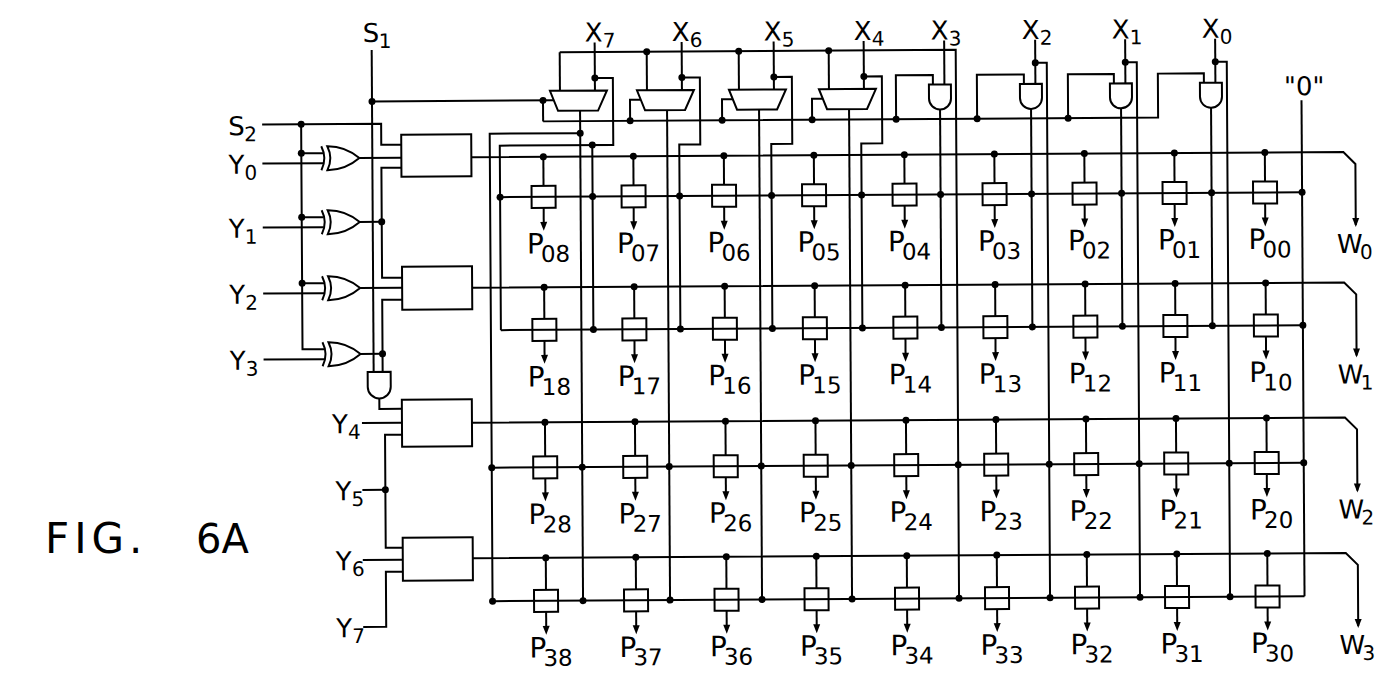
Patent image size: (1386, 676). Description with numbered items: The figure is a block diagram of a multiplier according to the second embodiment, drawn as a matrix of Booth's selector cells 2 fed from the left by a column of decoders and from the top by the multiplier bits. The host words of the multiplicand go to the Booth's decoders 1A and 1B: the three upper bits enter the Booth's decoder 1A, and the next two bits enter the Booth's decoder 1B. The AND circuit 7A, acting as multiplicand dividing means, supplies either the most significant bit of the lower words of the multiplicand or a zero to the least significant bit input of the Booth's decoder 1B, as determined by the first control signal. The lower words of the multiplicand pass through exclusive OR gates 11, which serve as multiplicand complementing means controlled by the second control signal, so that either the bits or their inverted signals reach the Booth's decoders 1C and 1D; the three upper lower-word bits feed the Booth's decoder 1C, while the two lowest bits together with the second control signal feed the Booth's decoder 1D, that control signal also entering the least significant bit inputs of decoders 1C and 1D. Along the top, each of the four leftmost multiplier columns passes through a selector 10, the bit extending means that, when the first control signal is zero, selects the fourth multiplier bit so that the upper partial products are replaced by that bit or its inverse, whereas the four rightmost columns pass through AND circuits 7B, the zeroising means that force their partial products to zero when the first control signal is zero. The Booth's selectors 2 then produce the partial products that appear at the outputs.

The Booth's decoder 1A is at (440, 579).
The Booth's decoder 1B is at (440, 445).
The Booth's decoder 1C is at (438, 308).
The Booth's decoder 1D is at (436, 175).
The Booth's selector 2 is at (889, 392).
The AND circuit 7A is at (391, 381).
The AND circuit 7B is at (929, 98).
The selector 10 is at (552, 89).
The exclusive OR gate 11 is at (334, 167).